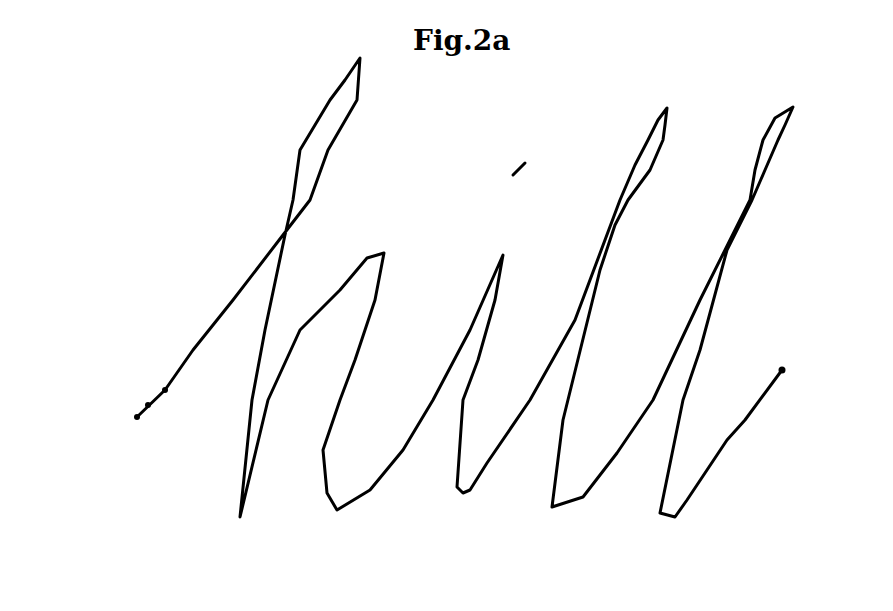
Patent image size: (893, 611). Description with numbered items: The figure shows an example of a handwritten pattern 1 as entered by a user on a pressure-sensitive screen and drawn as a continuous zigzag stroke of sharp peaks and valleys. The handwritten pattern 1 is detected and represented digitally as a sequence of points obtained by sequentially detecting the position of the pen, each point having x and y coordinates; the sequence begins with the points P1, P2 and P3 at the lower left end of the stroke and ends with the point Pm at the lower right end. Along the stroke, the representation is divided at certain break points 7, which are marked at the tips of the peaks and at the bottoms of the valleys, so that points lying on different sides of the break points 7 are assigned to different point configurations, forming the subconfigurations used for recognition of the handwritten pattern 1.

The handwritten pattern 1 is at (260, 180).
The break points 7 is at (356, 47).
The point P1 is at (93, 402).
The point P2 is at (109, 375).
The point P3 is at (122, 348).
The point Pm is at (783, 357).